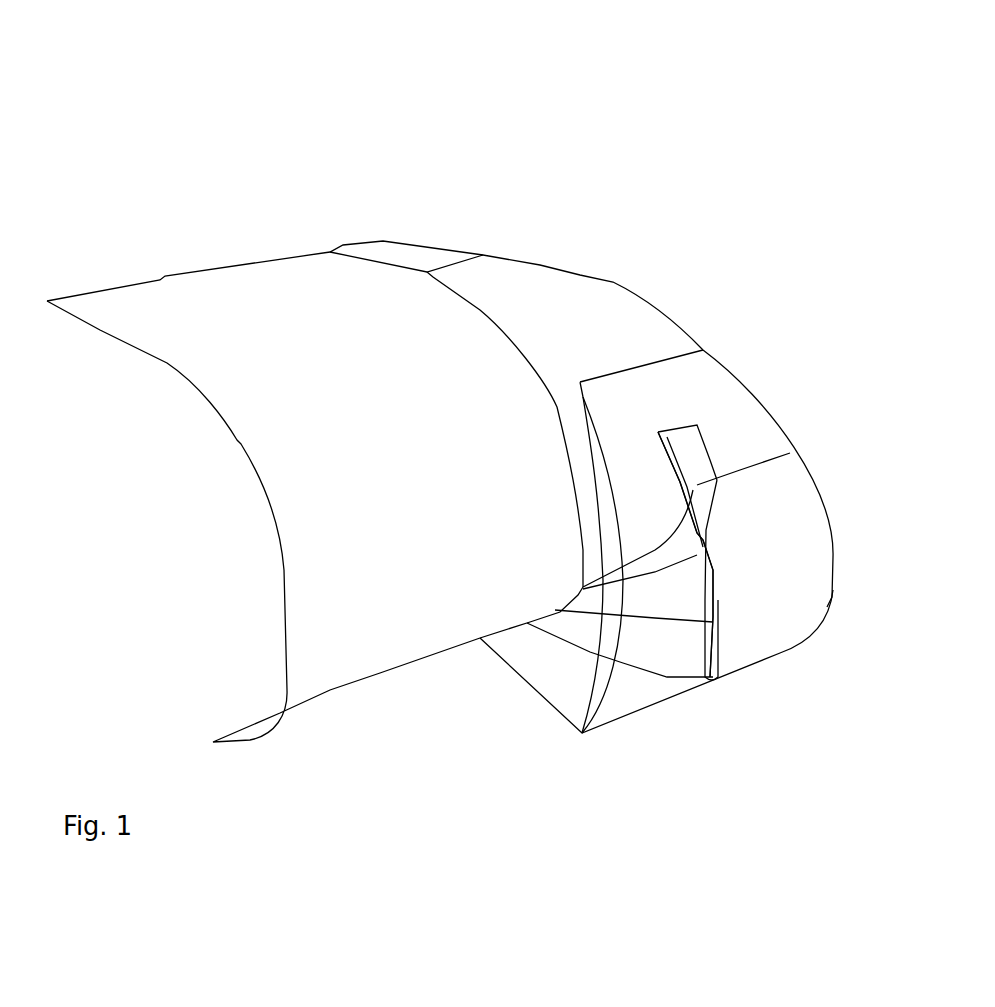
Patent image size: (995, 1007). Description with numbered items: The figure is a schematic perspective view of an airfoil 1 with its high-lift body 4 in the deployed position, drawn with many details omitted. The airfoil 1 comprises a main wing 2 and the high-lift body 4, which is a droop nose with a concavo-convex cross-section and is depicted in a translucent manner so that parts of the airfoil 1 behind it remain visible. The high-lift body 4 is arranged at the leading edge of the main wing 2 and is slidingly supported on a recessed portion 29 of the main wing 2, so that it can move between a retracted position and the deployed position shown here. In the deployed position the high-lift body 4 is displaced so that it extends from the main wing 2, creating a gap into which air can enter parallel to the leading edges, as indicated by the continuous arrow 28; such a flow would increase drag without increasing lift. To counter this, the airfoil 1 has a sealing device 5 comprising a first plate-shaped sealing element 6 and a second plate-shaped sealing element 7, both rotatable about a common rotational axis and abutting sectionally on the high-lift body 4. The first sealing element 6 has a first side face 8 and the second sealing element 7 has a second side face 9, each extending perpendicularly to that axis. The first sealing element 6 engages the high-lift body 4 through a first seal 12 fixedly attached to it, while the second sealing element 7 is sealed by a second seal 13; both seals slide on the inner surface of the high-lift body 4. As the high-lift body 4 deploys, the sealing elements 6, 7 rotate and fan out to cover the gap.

The airfoil 1 is at (704, 102).
The main wing 2 is at (550, 296).
The high-lift body 4 is at (830, 593).
The sealing device 5 is at (680, 865).
The first plate-shaped sealing element 6 is at (672, 647).
The second plate-shaped sealing element 7 is at (672, 598).
The first side face 8 is at (672, 647).
The second side face 9 is at (672, 580).
The first seal 12 is at (718, 647).
The second seal 13 is at (713, 570).
The air flow direction arrow 28 is at (532, 672).
The recessed portion 29 is at (557, 422).